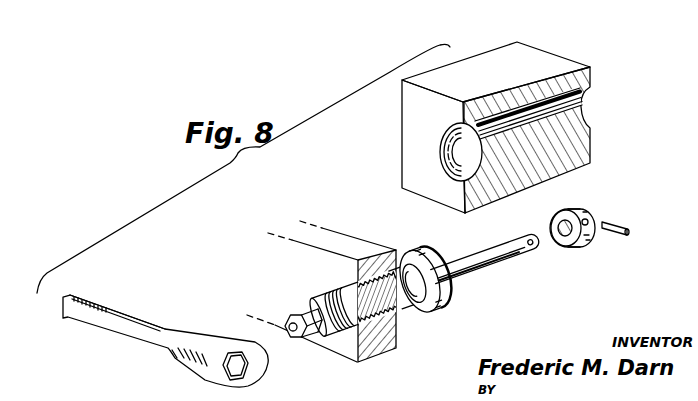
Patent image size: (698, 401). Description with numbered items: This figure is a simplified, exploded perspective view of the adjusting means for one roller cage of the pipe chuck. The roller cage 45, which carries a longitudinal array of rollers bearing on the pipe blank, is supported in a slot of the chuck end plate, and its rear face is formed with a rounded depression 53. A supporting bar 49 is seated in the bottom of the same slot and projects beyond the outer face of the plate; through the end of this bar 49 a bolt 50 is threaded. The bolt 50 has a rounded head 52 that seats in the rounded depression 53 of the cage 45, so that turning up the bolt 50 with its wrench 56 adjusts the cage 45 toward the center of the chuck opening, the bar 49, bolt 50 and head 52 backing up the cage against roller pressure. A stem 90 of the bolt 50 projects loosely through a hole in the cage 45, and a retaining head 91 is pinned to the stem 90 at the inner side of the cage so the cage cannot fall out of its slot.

The roller cage 45 is at (537, 58).
The rounded depression 53 is at (457, 152).
The supporting bar 49 is at (352, 248).
The bolt 50 is at (337, 333).
The rounded head 52 is at (450, 299).
The stem 90 is at (461, 258).
The retaining head 91 is at (582, 209).
The wrench 56 is at (150, 333).